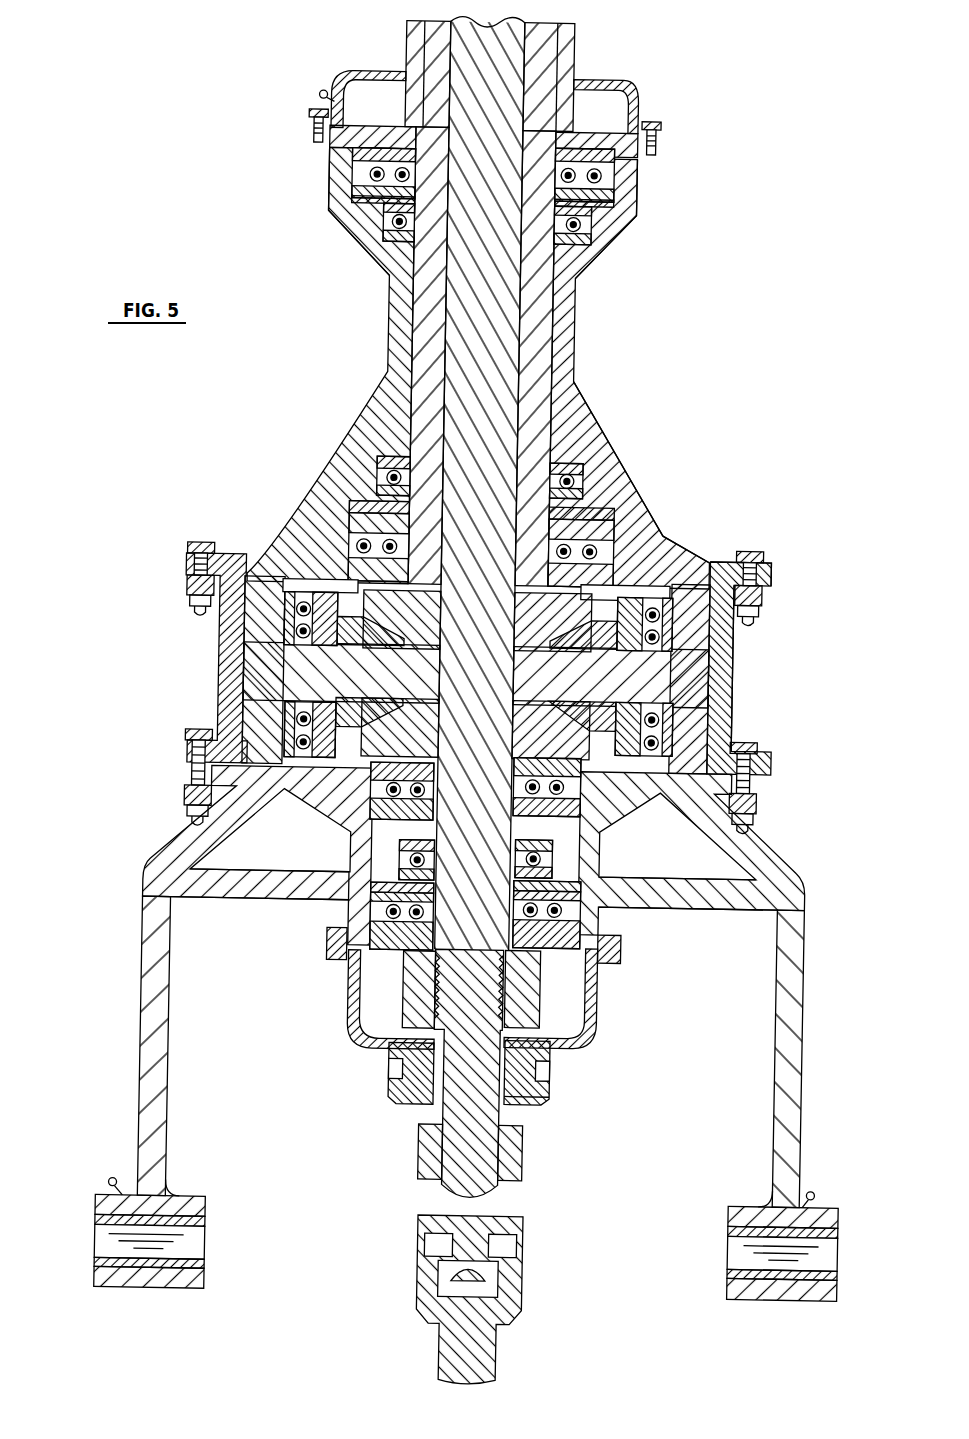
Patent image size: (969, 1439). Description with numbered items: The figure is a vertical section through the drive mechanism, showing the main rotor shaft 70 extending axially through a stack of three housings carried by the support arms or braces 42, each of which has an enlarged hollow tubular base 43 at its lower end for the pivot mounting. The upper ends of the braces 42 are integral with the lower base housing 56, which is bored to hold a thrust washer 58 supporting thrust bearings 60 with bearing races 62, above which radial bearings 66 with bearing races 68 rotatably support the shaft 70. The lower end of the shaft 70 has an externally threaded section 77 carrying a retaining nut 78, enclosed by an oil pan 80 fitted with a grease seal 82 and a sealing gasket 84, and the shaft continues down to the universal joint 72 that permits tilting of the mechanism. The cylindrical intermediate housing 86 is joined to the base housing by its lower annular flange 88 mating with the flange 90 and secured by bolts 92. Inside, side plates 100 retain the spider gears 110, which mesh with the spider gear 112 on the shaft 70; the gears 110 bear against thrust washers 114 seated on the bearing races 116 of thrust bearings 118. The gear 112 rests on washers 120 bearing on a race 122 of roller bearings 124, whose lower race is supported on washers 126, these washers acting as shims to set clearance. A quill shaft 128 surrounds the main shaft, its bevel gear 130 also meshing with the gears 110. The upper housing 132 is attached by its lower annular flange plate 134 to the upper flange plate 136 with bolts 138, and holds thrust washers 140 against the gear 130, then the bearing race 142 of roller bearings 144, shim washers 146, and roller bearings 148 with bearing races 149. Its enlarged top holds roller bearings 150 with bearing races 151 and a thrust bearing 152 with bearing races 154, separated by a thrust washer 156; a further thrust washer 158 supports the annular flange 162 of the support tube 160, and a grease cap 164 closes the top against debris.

The support arms or braces 42 is at (183, 1172).
The hollow tubular base 43 is at (222, 1220).
The lower base housing 56 is at (612, 866).
The thrust washer 58 is at (552, 952).
The thrust bearings 60 is at (595, 905).
The bearing races 62 is at (605, 930).
The radial bearings 66 is at (348, 893).
The bearing races 68 is at (410, 872).
The main rotor shaft 70 is at (460, 300).
The universal joint 72 is at (535, 1268).
The externally threaded section 77 is at (360, 960).
The retaining nut 78 is at (535, 1018).
The oil pan 80 is at (592, 1046).
The grease seal 82 is at (565, 1090).
The sealing gasket 84 is at (400, 1052).
The cylindrical intermediate housing 86 is at (740, 690).
The lower annular flange 88 is at (760, 755).
The flange 90 is at (768, 797).
The bolts 92 is at (760, 738).
The side plates 100 is at (232, 645).
The spider gears 110 is at (290, 660).
The spider gear 112 is at (292, 794).
The thrust washers 114 is at (345, 585).
The bearing races 116 is at (300, 598).
The thrust bearings 118 is at (248, 602).
The washers 120 is at (376, 800).
The bearing race 122 is at (409, 855).
The roller bearings 124 is at (580, 785).
The washers 126 is at (563, 858).
The quill shaft 128 is at (535, 350).
The bevel gear 130 is at (650, 585).
The upper housing 132 is at (580, 400).
The lower annular flange plate 134 is at (705, 556).
The upper flange plate 136 is at (770, 603).
The bolts 138 is at (769, 554).
The thrust washers 140 is at (620, 578).
The bearing race 142 is at (612, 542).
The roller bearings 144 is at (617, 522).
The washers 146 is at (375, 505).
The roller bearings 148 is at (585, 480).
The bearing races 149 is at (395, 458).
The roller bearings 150 is at (590, 225).
The bearing races 151 is at (585, 255).
The thrust bearing 152 is at (612, 190).
The bearing races 154 is at (612, 176).
The thrust washer 156 is at (612, 203).
The thrust washer 158 is at (628, 140).
The support tube 160 is at (570, 56).
The annular flange 162 is at (582, 117).
The grease cap 164 is at (362, 78).